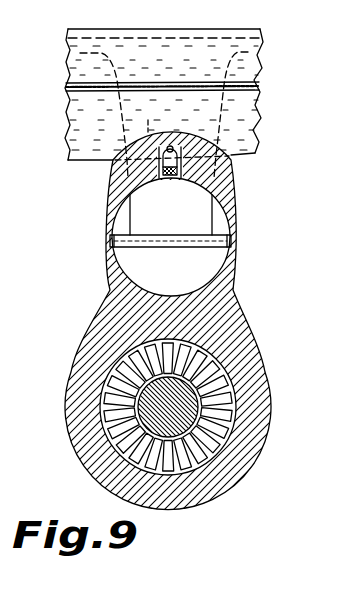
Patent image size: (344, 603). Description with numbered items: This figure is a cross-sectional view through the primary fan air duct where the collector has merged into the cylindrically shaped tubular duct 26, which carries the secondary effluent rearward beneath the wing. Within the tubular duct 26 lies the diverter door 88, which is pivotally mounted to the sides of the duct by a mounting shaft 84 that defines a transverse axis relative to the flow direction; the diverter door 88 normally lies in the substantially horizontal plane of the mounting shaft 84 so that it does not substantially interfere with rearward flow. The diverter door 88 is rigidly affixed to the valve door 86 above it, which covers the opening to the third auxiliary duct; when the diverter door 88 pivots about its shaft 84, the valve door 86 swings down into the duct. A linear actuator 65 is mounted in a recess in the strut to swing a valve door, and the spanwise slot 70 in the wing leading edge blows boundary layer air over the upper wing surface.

The spanwise slot 70 is at (220, 83).
The valve door 86 is at (164, 115).
The linear actuator 65 is at (175, 163).
The tubular duct 26 is at (187, 229).
The mounting shaft 84 is at (107, 242).
The diverter door 88 is at (178, 247).